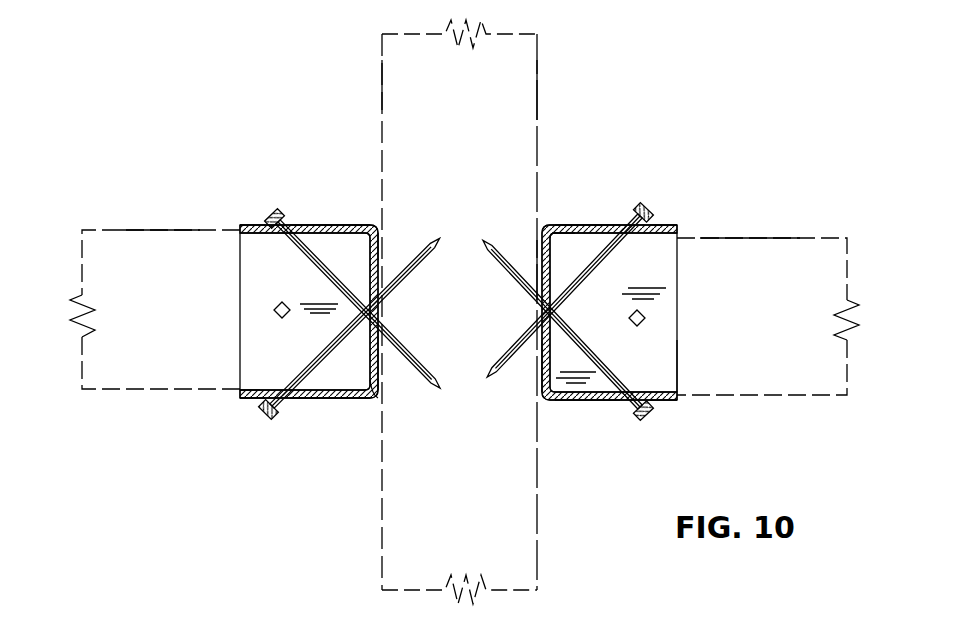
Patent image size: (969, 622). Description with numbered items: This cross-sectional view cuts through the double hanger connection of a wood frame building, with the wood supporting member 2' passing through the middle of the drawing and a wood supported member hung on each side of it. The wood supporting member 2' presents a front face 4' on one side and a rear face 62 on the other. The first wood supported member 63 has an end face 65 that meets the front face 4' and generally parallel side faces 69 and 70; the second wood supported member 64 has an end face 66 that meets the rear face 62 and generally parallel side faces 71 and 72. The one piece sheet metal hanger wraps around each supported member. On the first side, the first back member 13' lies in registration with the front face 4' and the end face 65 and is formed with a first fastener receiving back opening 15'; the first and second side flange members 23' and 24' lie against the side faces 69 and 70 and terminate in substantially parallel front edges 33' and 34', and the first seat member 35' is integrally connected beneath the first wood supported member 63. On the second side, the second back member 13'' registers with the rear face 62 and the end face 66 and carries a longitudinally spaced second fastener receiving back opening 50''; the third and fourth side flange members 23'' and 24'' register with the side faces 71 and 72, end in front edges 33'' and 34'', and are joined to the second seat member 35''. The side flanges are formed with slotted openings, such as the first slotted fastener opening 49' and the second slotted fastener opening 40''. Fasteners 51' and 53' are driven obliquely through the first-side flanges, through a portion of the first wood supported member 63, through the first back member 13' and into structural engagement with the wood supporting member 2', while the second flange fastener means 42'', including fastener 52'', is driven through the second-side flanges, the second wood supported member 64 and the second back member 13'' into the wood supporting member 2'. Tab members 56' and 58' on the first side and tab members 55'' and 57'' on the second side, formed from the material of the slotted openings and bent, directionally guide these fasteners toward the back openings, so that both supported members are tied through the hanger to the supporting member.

The wood supporting member 2' is at (508, 312).
The front face 4' is at (339, 85).
The rear face 62 is at (537, 103).
The first wood supported member 63 is at (258, 324).
The second wood supported member 64 is at (678, 311).
The side face 69 is at (103, 392).
The side face 71 is at (793, 397).
The side face 70 is at (166, 230).
The side face 72 is at (730, 238).
The end face 65 is at (395, 222).
The end face 66 is at (538, 264).
The first side flange member 23' is at (330, 193).
The second side flange member 24' is at (330, 435).
The front edge 33' is at (246, 206).
The front edge 34' is at (214, 419).
The first seat member 35' is at (309, 311).
The first back member 13' is at (403, 409).
The first fastener receiving back opening 15' is at (354, 360).
The first slotted fastener opening 49' is at (260, 378).
The fastener 51' is at (356, 302).
The fastener 53' is at (302, 330).
The tab member 56' is at (275, 219).
The tab member 58' is at (352, 360).
The third side flange member 23'' is at (587, 427).
The fourth side flange member 24'' is at (587, 191).
The front edge 33'' is at (694, 425).
The front edge 34'' is at (705, 201).
The second seat member 35'' is at (609, 312).
The second back member 13'' is at (570, 253).
The second slotted fastener opening 40'' is at (707, 366).
The second flange fastener means 42'' is at (568, 327).
The second fastener receiving back opening 50'' is at (515, 381).
The fastener 52'' is at (573, 293).
The tab member 55'' is at (643, 411).
The tab member 57'' is at (643, 213).